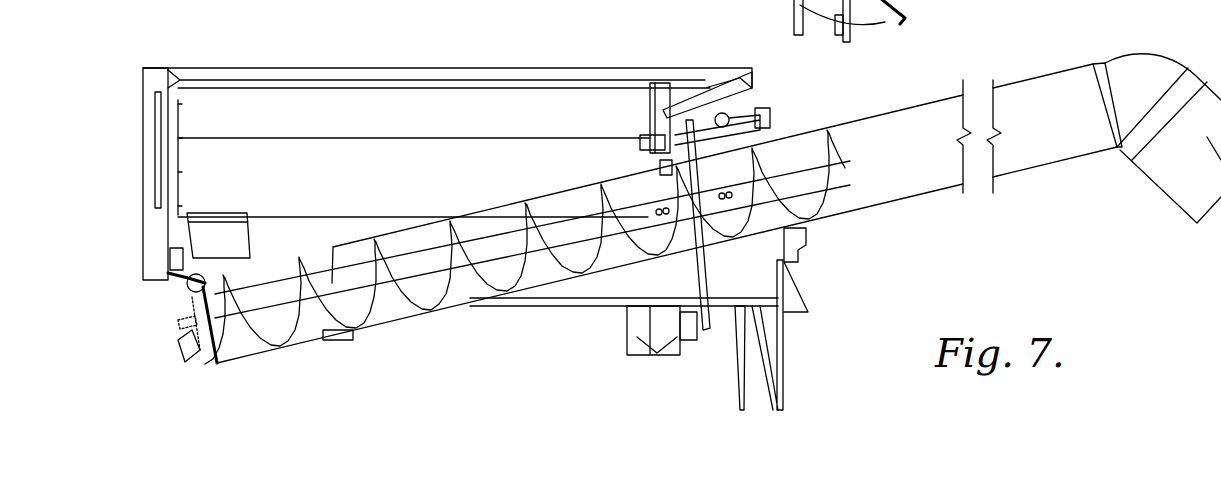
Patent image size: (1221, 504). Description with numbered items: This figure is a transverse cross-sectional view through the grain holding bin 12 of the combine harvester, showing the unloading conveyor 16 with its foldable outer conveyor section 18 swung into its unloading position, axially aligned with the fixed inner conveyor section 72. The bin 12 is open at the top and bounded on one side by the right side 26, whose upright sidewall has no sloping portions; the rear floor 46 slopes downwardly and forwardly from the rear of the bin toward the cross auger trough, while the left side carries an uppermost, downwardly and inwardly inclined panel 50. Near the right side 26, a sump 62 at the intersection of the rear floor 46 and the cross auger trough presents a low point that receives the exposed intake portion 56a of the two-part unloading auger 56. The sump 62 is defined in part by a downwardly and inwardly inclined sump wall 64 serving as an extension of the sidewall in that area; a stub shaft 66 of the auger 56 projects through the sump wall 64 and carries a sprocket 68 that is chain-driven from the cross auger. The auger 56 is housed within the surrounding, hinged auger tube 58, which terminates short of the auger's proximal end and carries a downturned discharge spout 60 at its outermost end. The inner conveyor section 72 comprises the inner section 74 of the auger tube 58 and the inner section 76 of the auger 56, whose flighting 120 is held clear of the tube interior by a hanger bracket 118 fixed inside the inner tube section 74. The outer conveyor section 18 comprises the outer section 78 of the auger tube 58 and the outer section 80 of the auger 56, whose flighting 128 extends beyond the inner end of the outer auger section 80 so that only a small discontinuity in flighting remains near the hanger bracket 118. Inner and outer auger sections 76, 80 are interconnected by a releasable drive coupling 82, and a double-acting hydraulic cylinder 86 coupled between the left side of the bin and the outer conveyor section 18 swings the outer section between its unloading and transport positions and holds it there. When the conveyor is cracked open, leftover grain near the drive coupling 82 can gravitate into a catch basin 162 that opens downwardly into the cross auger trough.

The grain holding bin 12 is at (507, 60).
The unloading conveyor 16 is at (1050, 64).
The outer conveyor section 18 is at (910, 103).
The right side 26 is at (141, 125).
The rear floor 46 is at (343, 106).
The panel 50 is at (698, 88).
The unloading auger 56 is at (393, 296).
The intake portion 56a is at (262, 292).
The auger tube 58 is at (600, 280).
The discharge spout 60 is at (1185, 190).
The sump 62 is at (258, 347).
The sump wall 64 is at (178, 290).
The stub shaft 66 is at (183, 330).
The sprocket 68 is at (192, 360).
The inner conveyor section 72 is at (500, 202).
The inner section of auger tube 74 is at (555, 192).
The inner section of auger 76 is at (468, 290).
The outer section of auger tube 78 is at (923, 183).
The outer section of auger 80 is at (800, 183).
The drive coupling 82 is at (680, 232).
The hydraulic cylinder 86 is at (708, 120).
The hanger bracket 118 is at (668, 190).
The flighting 120 is at (390, 238).
The flighting 128 is at (777, 160).
The catch basin 162 is at (757, 281).